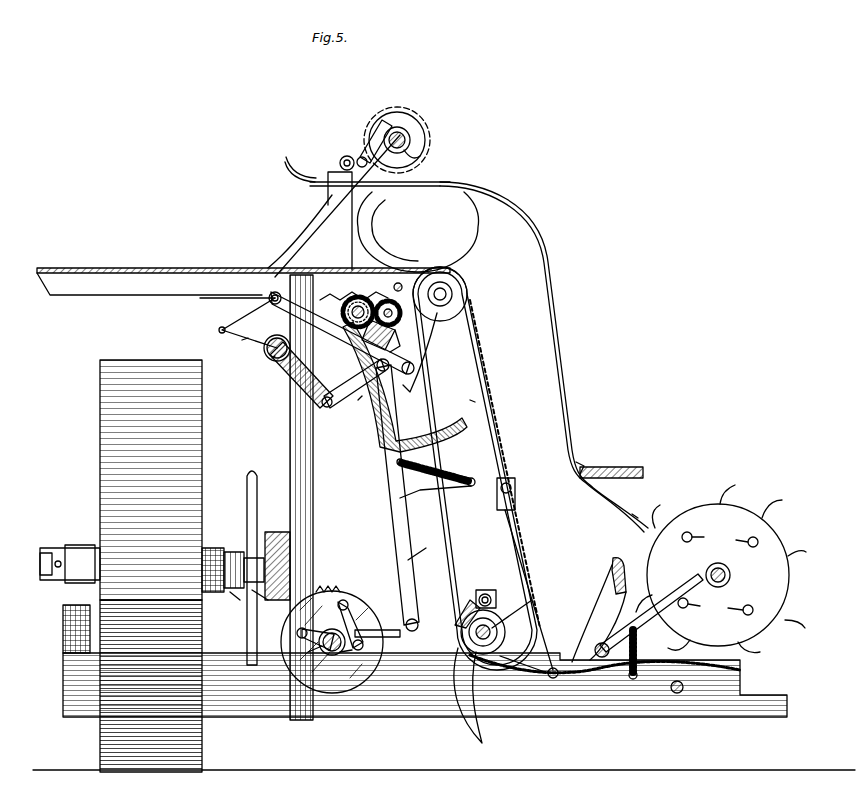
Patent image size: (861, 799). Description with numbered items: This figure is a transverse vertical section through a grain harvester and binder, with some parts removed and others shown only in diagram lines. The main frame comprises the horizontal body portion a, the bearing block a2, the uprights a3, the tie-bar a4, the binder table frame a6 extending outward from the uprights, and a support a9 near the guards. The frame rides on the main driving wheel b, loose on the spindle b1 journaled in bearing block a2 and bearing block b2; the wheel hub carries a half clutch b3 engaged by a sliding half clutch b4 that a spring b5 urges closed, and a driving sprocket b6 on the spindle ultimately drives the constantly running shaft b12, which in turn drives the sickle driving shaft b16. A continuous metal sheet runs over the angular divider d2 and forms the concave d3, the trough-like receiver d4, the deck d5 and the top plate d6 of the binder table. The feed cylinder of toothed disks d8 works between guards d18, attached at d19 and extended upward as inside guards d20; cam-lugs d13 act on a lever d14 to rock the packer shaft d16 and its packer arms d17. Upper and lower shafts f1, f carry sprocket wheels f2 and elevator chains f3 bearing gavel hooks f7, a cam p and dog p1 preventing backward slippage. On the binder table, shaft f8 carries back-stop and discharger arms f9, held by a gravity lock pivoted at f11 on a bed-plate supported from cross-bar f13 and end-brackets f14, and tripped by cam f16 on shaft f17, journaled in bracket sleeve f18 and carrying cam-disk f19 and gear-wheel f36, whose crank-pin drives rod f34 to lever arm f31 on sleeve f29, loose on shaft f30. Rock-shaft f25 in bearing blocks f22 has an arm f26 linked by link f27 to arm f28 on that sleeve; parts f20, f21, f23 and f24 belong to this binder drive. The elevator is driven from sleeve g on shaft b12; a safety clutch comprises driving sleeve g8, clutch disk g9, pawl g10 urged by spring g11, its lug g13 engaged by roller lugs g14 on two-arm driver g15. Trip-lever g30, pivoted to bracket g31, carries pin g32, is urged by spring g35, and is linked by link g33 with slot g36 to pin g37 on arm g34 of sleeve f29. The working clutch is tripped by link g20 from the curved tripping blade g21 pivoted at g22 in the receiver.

The horizontal or body portion a is at (262, 700).
The bearing block a2 is at (68, 606).
The uprights a3 is at (292, 452).
The longitudinal tie-bar a4 is at (290, 542).
The binder table frame a6 is at (165, 296).
The support block a9 is at (628, 468).
The main driving wheel b is at (151, 566).
The spindle or shaft b1 is at (52, 548).
The bearing block b2 is at (250, 602).
The half clutch b3 is at (210, 548).
The sliding half clutch b4 is at (232, 552).
The spring b5 is at (224, 602).
The driving sprocket b6 is at (250, 478).
The constantly running shaft b12 is at (335, 655).
The sickle driving shaft b16 is at (677, 694).
The angular divider d2 is at (612, 564).
The concave d3 is at (680, 664).
The trough-like receiver d4 is at (540, 660).
The deck d5 is at (470, 400).
The top plate d6 is at (150, 268).
The toothed disks d8 is at (742, 518).
The cam-lugs d13 is at (720, 538).
The lever d14 is at (698, 578).
The packer shaft d16 is at (594, 648).
The packer arms d17 is at (606, 610).
The guards d18 is at (632, 514).
The attachment point of guards d19 is at (578, 466).
The inside guards d20 is at (288, 176).
The lower elevator shaft f is at (516, 608).
The upper elevator shaft f1 is at (453, 294).
The sprocket wheels f2 is at (456, 304).
The elevator chains f3 is at (430, 428).
The gavel carrying hook-like arms f7 is at (470, 258).
The shaft f8 is at (412, 269).
The arms f9 is at (372, 244).
The pivot f11 is at (340, 163).
The cross-bar f13 is at (420, 151).
The end-brackets f14 is at (330, 212).
The cam f16 is at (421, 159).
The knotter operating and trip-shaft f17 is at (408, 136).
The bracket sleeve f18 is at (374, 143).
The cam-disk f19 is at (426, 140).
The segment f20 is at (380, 447).
The block f21 is at (392, 322).
The bearing blocks f22 is at (376, 280).
The gear f23 is at (392, 321).
The gear f24 is at (348, 302).
The rock-shaft f25 is at (348, 312).
The arm f26 is at (402, 344).
The link f27 is at (358, 400).
The arm f28 is at (296, 378).
The sleeve f29 is at (265, 351).
The shaft f30 is at (272, 358).
The lever arm f31 is at (242, 340).
The rod f34 is at (306, 236).
The gear-wheel f36 is at (385, 118).
The sleeve g is at (331, 642).
The driving sleeve g8 is at (316, 632).
The clutch disk g9 is at (352, 600).
The pawl or clutch member g10 is at (360, 640).
The spring g11 is at (336, 590).
The lug g13 is at (380, 634).
The roller lugs g14 is at (348, 660).
The two-arm driver g15 is at (309, 659).
The link g20 is at (500, 480).
The curved tripping blade g21 is at (520, 558).
The pivot g22 is at (553, 680).
The trip-lever g30 is at (396, 490).
The bracket g31 is at (424, 547).
The pin g32 is at (412, 618).
The link g33 is at (335, 338).
The arm g34 is at (248, 323).
The spring g35 is at (442, 470).
The slot g36 is at (272, 288).
The pin g37 is at (237, 289).
The cam p is at (468, 636).
The dog p1 is at (459, 614).